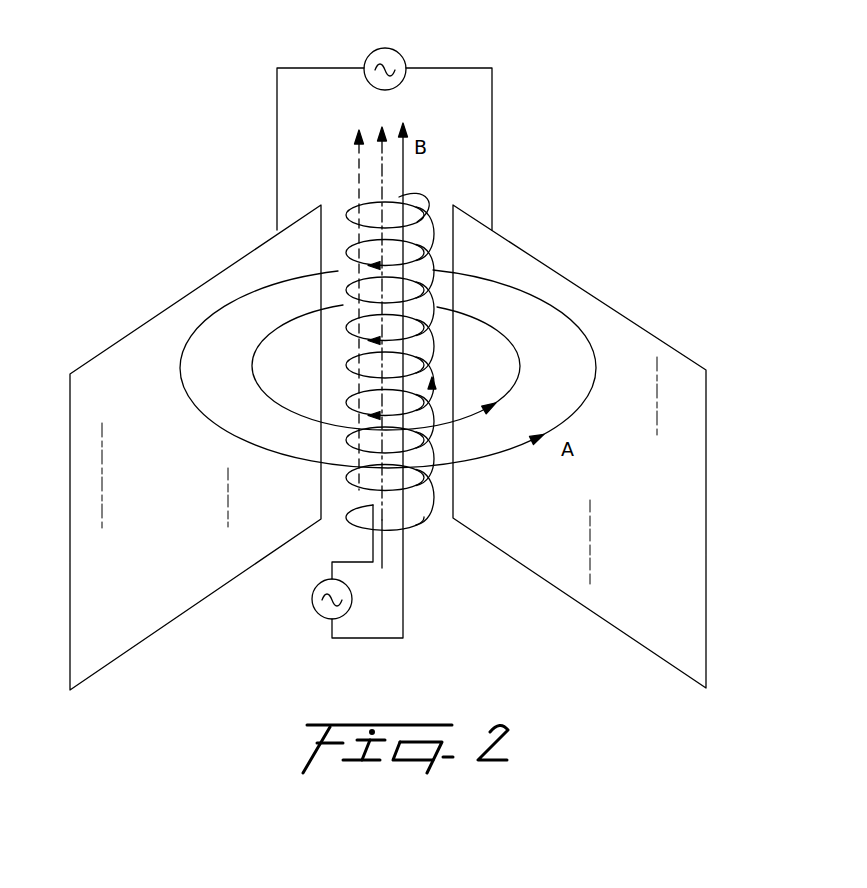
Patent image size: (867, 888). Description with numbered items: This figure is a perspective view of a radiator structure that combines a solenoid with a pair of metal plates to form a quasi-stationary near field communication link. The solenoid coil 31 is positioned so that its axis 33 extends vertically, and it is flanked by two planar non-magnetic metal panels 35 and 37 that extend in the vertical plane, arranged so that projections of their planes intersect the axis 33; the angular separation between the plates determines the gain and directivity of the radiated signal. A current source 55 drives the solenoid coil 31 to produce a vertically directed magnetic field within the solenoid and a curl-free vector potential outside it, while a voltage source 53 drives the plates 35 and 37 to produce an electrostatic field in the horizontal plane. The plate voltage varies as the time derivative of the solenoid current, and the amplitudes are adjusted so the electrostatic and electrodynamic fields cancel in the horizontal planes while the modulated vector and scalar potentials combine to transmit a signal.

The solenoid coil 31 is at (362, 530).
The axis 33 is at (385, 545).
The planar non-magnetic metal panel 35 is at (127, 337).
The planar non-magnetic metal panel 37 is at (700, 518).
The voltage source 53 is at (396, 63).
The current source 55 is at (325, 620).